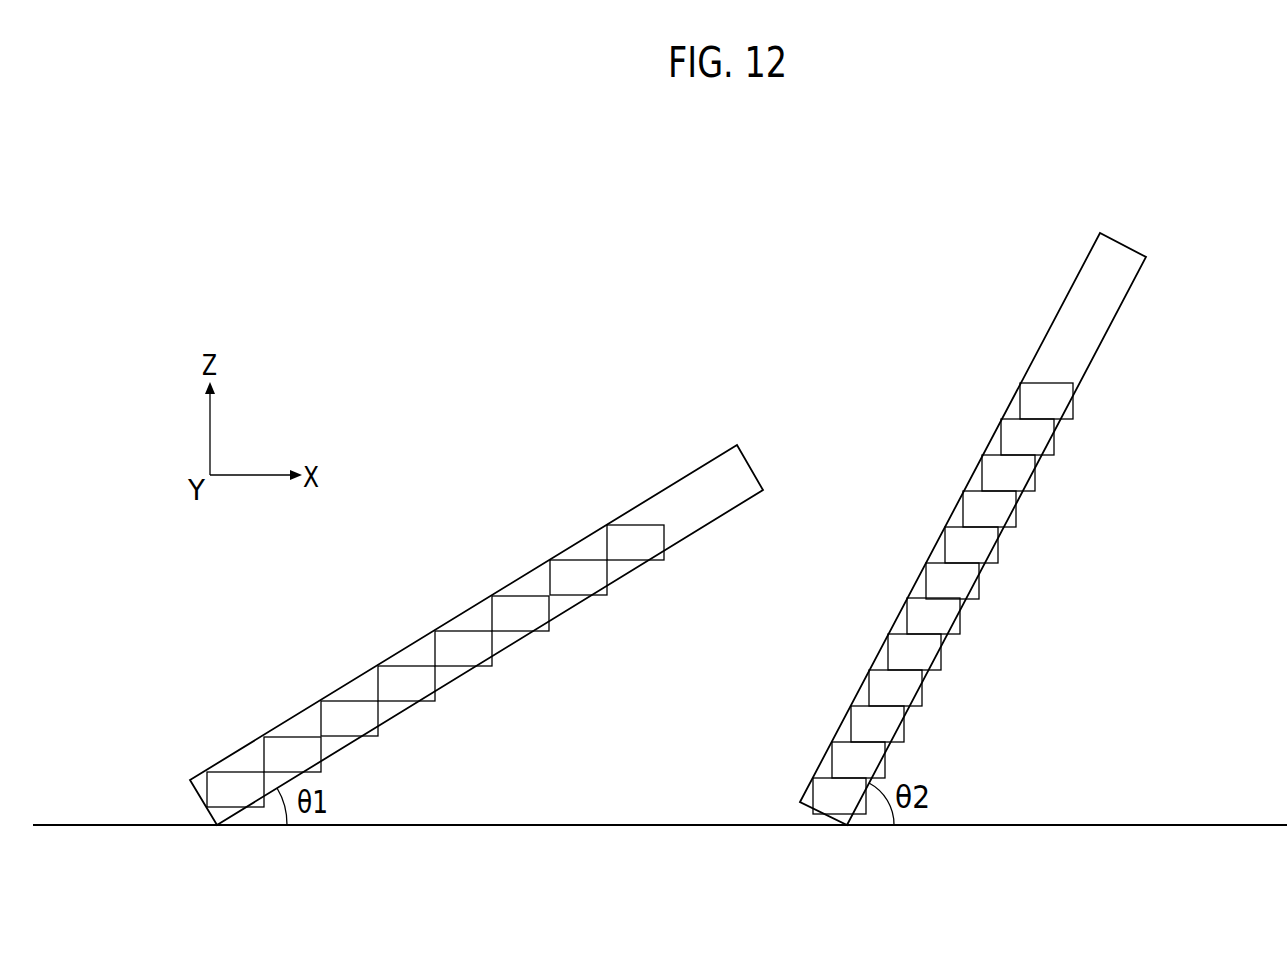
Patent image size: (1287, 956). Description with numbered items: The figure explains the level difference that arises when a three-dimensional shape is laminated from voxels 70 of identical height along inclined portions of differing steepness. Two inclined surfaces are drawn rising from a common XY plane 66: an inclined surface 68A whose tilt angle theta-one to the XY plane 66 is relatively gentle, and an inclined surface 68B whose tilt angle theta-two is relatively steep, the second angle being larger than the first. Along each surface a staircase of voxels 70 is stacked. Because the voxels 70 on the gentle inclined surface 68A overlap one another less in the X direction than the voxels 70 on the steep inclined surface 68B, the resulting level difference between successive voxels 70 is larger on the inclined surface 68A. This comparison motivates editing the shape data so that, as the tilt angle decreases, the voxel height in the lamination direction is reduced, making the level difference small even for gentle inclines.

The XY plane 66 is at (1237, 825).
The inclined surface 68A is at (737, 470).
The inclined surface 68B is at (1112, 292).
The voxel 70 is at (522, 613).